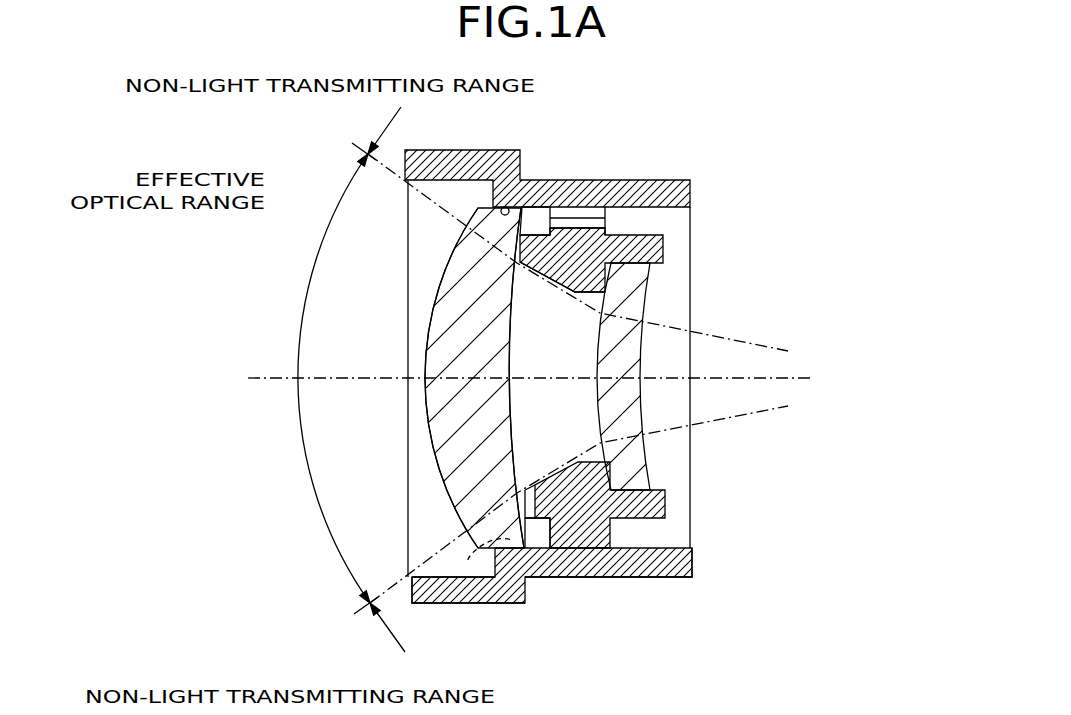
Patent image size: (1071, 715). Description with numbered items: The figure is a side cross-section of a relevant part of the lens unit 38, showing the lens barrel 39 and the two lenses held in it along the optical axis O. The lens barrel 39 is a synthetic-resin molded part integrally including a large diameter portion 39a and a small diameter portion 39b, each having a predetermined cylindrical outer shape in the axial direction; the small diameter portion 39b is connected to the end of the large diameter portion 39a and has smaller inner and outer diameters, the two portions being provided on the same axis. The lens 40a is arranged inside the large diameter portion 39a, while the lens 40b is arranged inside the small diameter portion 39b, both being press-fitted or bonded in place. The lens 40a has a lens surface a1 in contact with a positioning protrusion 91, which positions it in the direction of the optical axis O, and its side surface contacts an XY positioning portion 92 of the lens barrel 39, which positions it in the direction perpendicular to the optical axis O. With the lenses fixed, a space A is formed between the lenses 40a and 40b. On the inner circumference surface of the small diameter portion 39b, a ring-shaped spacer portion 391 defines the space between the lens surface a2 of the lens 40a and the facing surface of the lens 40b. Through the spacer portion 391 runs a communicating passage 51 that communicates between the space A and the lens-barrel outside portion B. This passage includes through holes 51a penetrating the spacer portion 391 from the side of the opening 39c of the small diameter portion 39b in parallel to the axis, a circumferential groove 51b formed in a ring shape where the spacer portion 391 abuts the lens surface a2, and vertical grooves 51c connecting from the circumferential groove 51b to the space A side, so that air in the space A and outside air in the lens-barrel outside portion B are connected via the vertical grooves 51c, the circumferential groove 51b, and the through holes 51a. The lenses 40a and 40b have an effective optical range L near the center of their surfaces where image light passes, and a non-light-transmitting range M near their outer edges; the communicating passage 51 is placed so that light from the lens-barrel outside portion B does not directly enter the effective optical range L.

The lens unit 38 is at (752, 146).
The lens barrel 39 is at (596, 394).
The large diameter portion 39a is at (483, 603).
The small diameter portion 39b is at (667, 577).
The opening 39c is at (690, 272).
The spacer portion 391 is at (580, 267).
The lens 40a is at (453, 378).
The lens 40b is at (623, 363).
The communicating passage 51 is at (643, 378).
The through holes 51a is at (577, 220).
The circumferential groove 51b is at (540, 215).
The vertical grooves 51c is at (541, 538).
The positioning protrusion 91 is at (468, 560).
The XY positioning portion 92 is at (505, 207).
The lens surface a1 is at (445, 483).
The lens surface a2 is at (512, 430).
The space A is at (559, 349).
The lens-barrel outside portion B is at (726, 251).
The effective optical range L is at (323, 237).
The non-light-transmitting range M is at (388, 125).
The optical axis O is at (280, 377).